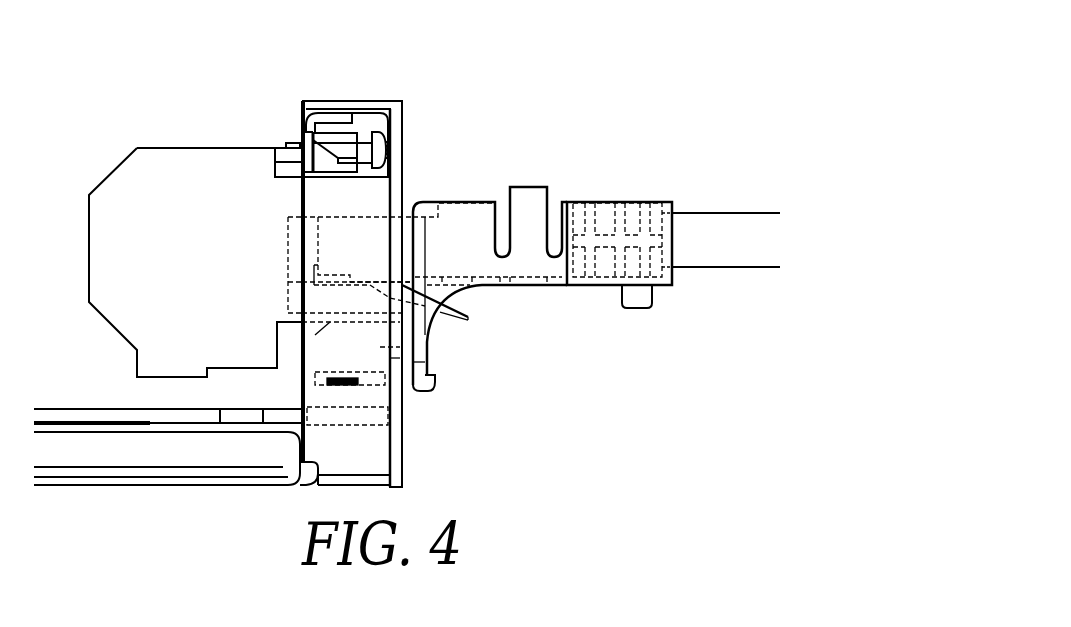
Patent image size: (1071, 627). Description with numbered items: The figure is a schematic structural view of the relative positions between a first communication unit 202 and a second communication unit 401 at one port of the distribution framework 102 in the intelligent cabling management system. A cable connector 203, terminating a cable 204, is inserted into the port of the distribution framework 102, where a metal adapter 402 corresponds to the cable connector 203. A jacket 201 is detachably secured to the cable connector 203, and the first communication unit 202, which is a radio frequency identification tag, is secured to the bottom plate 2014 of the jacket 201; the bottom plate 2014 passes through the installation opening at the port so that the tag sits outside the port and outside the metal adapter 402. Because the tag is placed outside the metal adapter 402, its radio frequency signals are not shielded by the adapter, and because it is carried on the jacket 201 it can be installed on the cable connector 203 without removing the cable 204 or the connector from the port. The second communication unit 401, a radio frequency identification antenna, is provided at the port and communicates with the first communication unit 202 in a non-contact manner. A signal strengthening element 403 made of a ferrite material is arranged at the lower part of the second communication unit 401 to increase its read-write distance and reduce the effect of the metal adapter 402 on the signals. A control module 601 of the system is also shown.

The distribution framework 102 is at (363, 80).
The metal adapter 402 is at (208, 162).
The cable connector 203 is at (430, 215).
The cable 204 is at (705, 213).
The jacket 201 is at (558, 298).
The first communication unit 202 is at (340, 377).
The bottom plate 2014 is at (413, 386).
The control module 601 is at (105, 408).
The second communication unit 401 is at (372, 400).
The signal strengthening element 403 is at (355, 425).